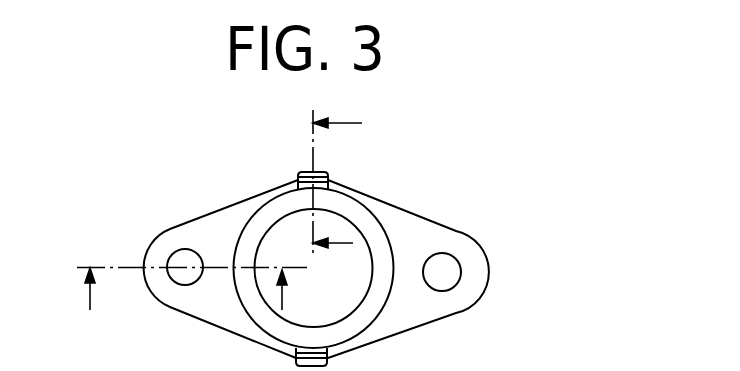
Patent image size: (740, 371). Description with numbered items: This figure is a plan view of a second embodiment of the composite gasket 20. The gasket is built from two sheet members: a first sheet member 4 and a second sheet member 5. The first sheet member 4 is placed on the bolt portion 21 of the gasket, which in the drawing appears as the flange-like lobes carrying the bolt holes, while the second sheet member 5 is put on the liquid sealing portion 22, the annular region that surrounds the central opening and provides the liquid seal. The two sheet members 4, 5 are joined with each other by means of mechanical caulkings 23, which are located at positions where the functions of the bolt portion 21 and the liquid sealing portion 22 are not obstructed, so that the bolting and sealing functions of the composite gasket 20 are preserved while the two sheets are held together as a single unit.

The first sheet member 4 is at (388, 150).
The second sheet member 5 is at (425, 187).
The composite gasket 20 is at (492, 223).
The bolt portion 21 is at (198, 289).
The liquid sealing portion 22 is at (418, 303).
The mechanical caulking 23 is at (306, 174).